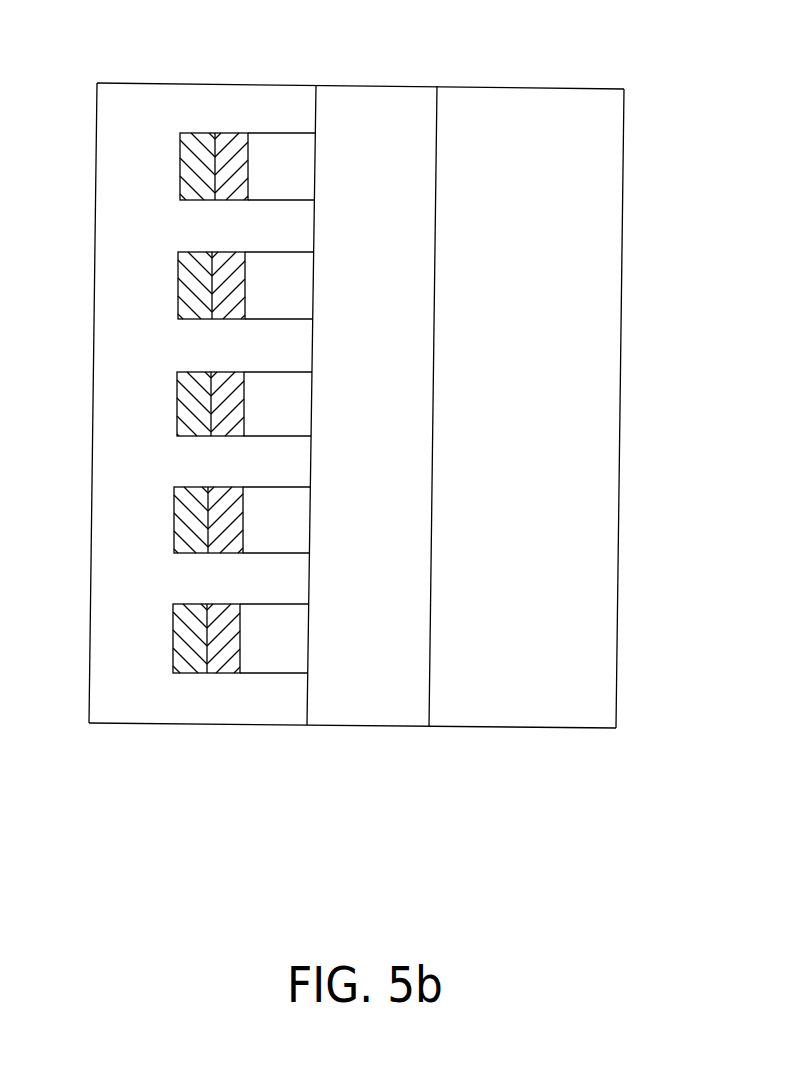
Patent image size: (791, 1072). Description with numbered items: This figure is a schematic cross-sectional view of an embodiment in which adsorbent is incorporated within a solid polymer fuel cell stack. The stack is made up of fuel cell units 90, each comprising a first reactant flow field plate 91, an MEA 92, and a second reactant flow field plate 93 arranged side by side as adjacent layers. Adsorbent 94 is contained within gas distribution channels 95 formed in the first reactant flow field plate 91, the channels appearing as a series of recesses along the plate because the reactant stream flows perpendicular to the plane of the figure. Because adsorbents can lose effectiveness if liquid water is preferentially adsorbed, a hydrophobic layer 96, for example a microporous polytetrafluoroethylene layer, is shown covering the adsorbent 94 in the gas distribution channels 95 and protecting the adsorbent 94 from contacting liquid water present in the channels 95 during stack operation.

The fuel cell unit 90 is at (647, 97).
The first reactant flow field plate 91 is at (133, 629).
The MEA 92 is at (373, 373).
The second reactant flow field plate 93 is at (523, 442).
The adsorbent 94 is at (215, 166).
The gas distribution channels 95 is at (177, 405).
The hydrophobic layer 96 is at (229, 287).